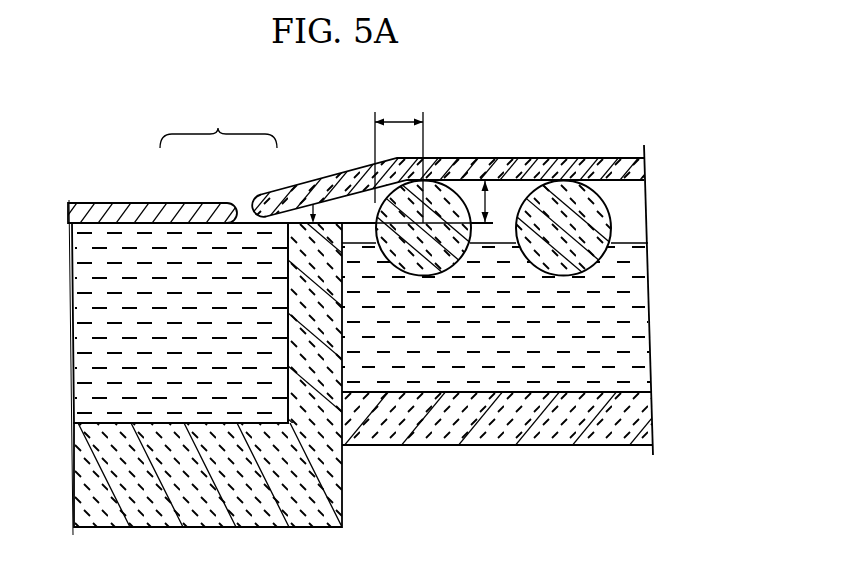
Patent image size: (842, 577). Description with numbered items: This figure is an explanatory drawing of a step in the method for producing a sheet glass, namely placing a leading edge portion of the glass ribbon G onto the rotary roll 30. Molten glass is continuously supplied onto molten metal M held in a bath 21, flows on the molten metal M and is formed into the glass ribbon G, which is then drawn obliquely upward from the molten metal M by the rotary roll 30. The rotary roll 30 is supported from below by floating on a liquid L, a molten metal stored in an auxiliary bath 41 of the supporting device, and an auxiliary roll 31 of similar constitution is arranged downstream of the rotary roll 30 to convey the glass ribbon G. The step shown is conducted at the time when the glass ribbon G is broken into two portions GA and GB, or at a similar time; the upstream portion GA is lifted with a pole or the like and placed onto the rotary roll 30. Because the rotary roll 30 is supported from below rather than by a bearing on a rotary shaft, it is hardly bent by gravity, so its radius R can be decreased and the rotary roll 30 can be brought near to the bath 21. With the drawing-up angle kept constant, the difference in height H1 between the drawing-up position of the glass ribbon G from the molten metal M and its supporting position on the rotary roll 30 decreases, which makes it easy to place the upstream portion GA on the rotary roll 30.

The glass ribbon G is at (218, 127).
The upstream portion of the glass ribbon GA is at (178, 205).
The downstream portion of the glass ribbon GB is at (275, 200).
The radius of the rotary roll R is at (399, 158).
The rotary roll 30 is at (437, 197).
The difference in height H1 is at (487, 200).
The auxiliary roll 31 is at (578, 197).
The molten metal M is at (82, 333).
The bath 21 is at (78, 477).
The liquid L is at (457, 372).
The auxiliary bath 41 is at (543, 432).